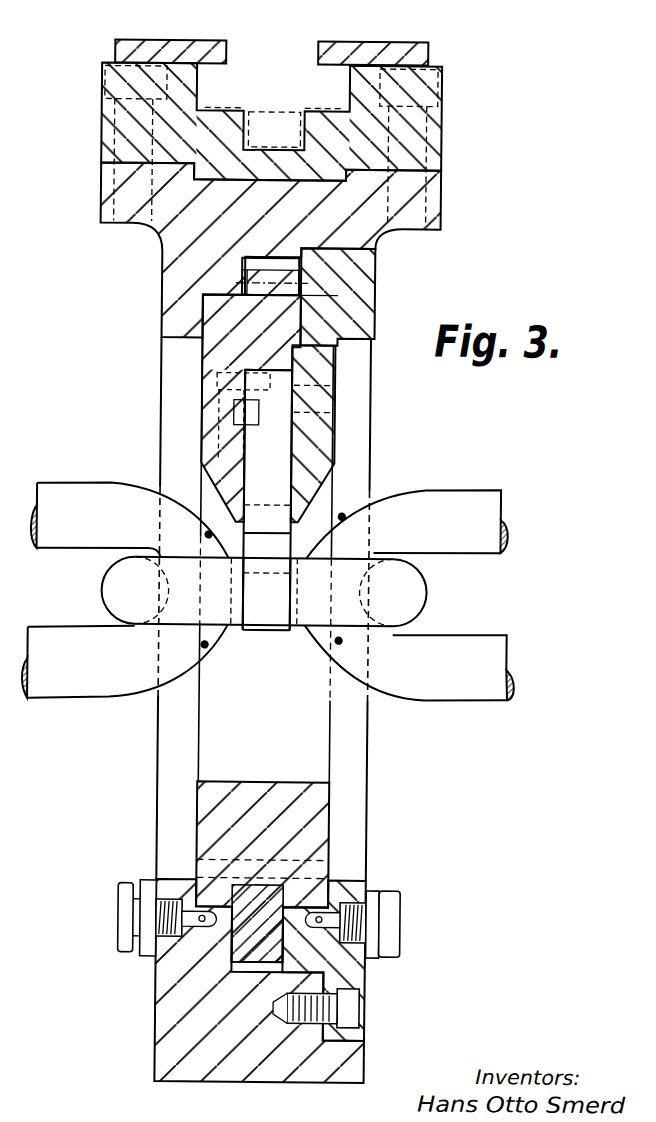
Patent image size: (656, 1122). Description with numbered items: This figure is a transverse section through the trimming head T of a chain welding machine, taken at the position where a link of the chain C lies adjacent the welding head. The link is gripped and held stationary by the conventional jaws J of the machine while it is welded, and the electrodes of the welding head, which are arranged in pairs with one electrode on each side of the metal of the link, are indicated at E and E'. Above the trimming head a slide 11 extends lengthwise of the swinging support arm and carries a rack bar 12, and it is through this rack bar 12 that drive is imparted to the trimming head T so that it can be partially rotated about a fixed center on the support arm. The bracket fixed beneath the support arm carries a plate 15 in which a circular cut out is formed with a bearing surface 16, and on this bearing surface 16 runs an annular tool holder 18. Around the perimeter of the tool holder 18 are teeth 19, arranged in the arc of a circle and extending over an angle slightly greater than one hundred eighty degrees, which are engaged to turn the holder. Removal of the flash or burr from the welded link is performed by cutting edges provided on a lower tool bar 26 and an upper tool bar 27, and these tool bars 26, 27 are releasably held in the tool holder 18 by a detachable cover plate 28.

The slide 11 is at (365, 118).
The rack bar 12 is at (246, 109).
The plate 15 is at (198, 217).
The bearing surface 16 is at (290, 246).
The annular tool holder 18 is at (224, 330).
The teeth 19 is at (239, 277).
The detachable cover plate 28 is at (326, 372).
The lower tool bar 26 is at (266, 632).
The upper tool bar 27 is at (264, 594).
The chain C is at (472, 613).
The jaws J is at (268, 590).
The electrode E is at (193, 585).
The electrode E' is at (357, 578).
The trimming head T is at (412, 724).